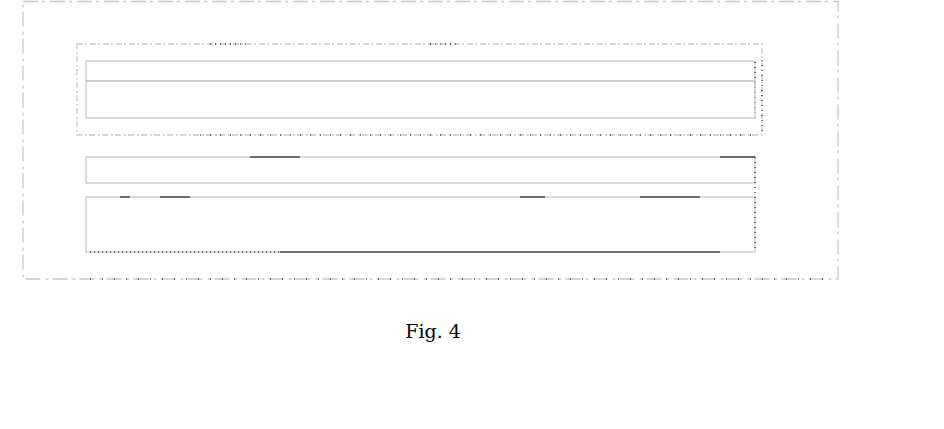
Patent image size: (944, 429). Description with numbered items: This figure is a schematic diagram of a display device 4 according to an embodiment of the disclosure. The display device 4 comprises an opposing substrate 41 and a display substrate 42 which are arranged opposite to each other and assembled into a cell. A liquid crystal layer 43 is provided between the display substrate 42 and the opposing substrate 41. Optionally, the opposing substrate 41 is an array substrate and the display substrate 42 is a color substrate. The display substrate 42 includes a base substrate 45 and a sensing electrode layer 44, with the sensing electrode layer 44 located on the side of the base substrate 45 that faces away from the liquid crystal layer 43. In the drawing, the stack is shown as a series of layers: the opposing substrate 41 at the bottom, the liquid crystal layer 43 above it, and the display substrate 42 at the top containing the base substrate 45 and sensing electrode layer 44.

The display device 4 is at (838, 138).
The opposing substrate 41 is at (420, 204).
The display substrate 42 is at (762, 88).
The liquid crystal layer 43 is at (420, 170).
The sensing electrode layer 44 is at (420, 89).
The base substrate 45 is at (420, 99).